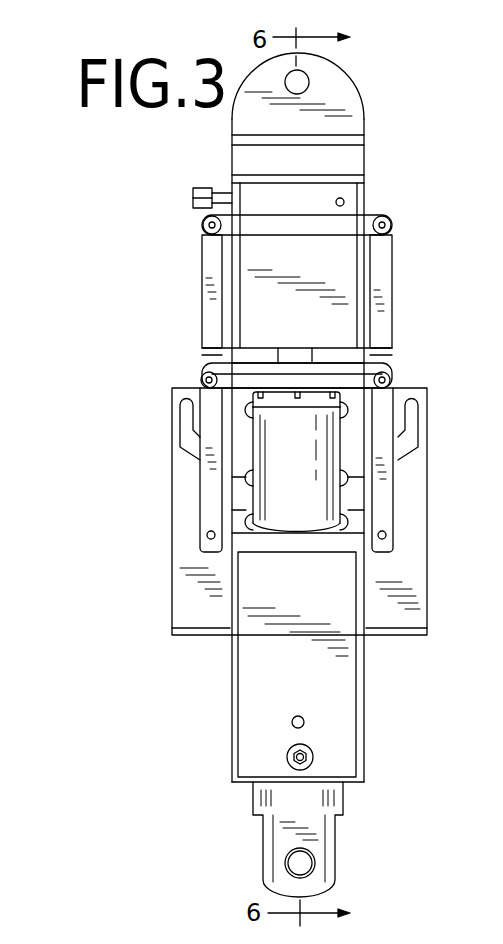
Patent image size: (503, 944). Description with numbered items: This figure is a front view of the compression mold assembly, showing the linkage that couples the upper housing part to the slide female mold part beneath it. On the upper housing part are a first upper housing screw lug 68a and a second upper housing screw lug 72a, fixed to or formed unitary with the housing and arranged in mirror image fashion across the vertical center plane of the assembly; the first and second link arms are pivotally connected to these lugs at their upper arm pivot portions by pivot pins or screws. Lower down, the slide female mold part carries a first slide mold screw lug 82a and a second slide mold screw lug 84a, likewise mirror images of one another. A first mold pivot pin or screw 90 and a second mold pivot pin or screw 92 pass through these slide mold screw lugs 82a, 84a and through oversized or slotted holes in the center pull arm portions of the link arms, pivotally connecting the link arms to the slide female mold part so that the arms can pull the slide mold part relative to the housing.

The first upper housing screw lug 68a is at (204, 220).
The second upper housing screw lug 72a is at (390, 219).
The first mold pivot pin or screw 90 is at (201, 378).
The second mold pivot pin or screw 92 is at (389, 377).
The first slide mold screw lug 82a is at (204, 381).
The second slide mold screw lug 84a is at (396, 396).